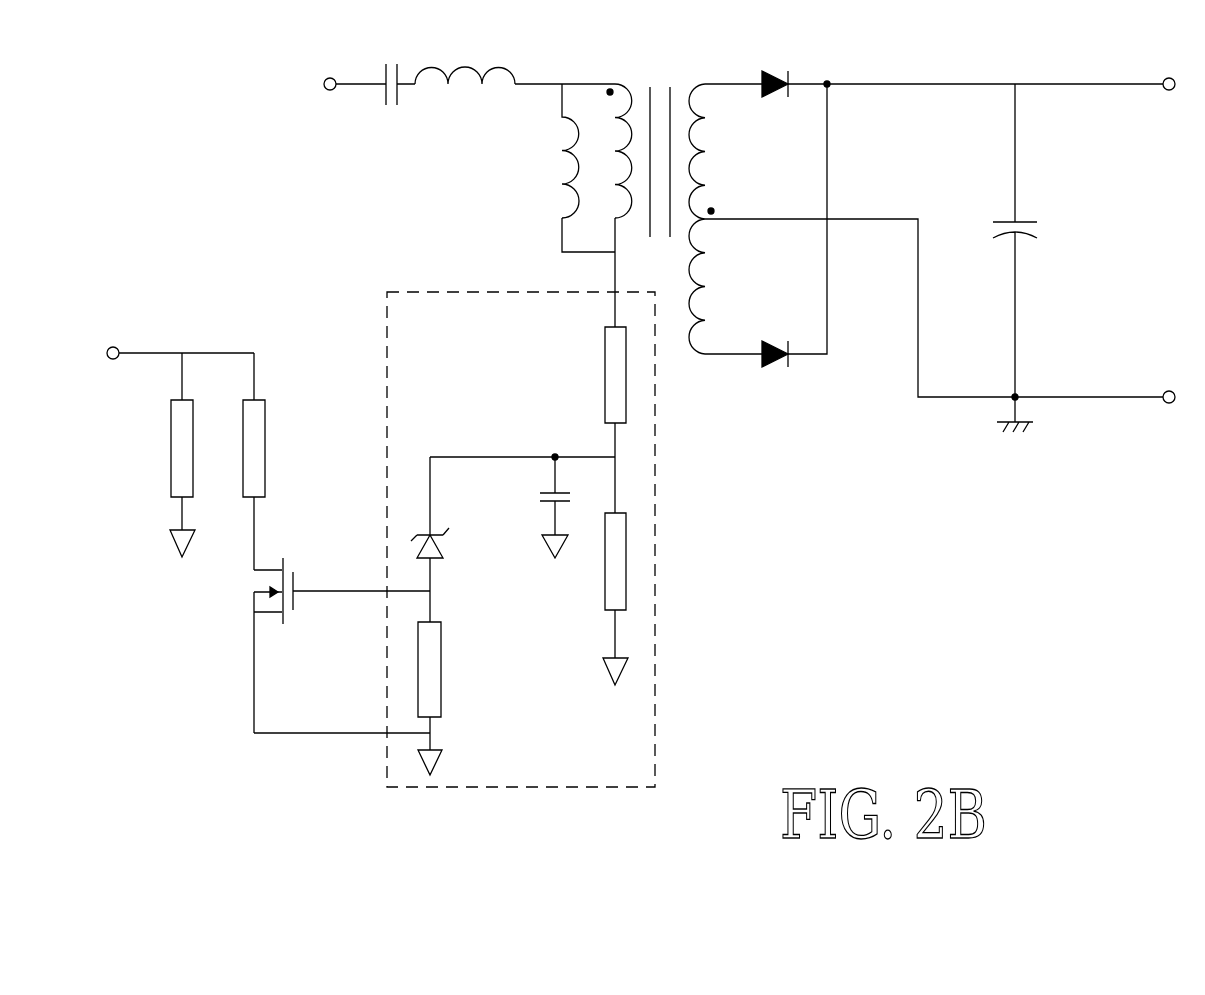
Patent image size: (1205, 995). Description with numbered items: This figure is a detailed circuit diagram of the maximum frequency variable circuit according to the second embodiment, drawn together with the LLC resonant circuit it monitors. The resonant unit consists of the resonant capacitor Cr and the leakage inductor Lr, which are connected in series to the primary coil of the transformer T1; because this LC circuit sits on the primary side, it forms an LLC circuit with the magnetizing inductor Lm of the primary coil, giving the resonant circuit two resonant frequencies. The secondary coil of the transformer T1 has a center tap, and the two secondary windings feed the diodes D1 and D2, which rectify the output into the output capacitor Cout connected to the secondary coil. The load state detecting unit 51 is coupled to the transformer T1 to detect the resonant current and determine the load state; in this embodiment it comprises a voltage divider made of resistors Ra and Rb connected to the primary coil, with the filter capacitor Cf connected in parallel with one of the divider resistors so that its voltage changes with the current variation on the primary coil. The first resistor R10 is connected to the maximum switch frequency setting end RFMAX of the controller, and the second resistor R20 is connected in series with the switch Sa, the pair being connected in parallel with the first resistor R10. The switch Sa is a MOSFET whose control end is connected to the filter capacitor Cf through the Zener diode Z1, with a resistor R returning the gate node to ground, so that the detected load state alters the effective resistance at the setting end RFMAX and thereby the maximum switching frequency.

The resonant capacitor Cr is at (397, 58).
The leakage inductor Lr is at (465, 48).
The magnetizing inductor Lm is at (543, 151).
The transformer T1 is at (660, 186).
The diode D1 is at (772, 64).
The second rectifier diode D2 is at (772, 379).
The output capacitor Cout is at (1057, 258).
The maximum switch frequency setting end RFMAX is at (119, 334).
The first resistor R10 is at (151, 455).
The second resistor R20 is at (287, 461).
The switch Sa is at (342, 645).
The Zener diode Z1 is at (449, 539).
The resistor R is at (446, 698).
The filter capacitor Cf is at (534, 507).
The voltage divider resistor Ra is at (588, 375).
The voltage divider resistor Rb is at (589, 599).
The load state detecting unit 51 is at (647, 683).